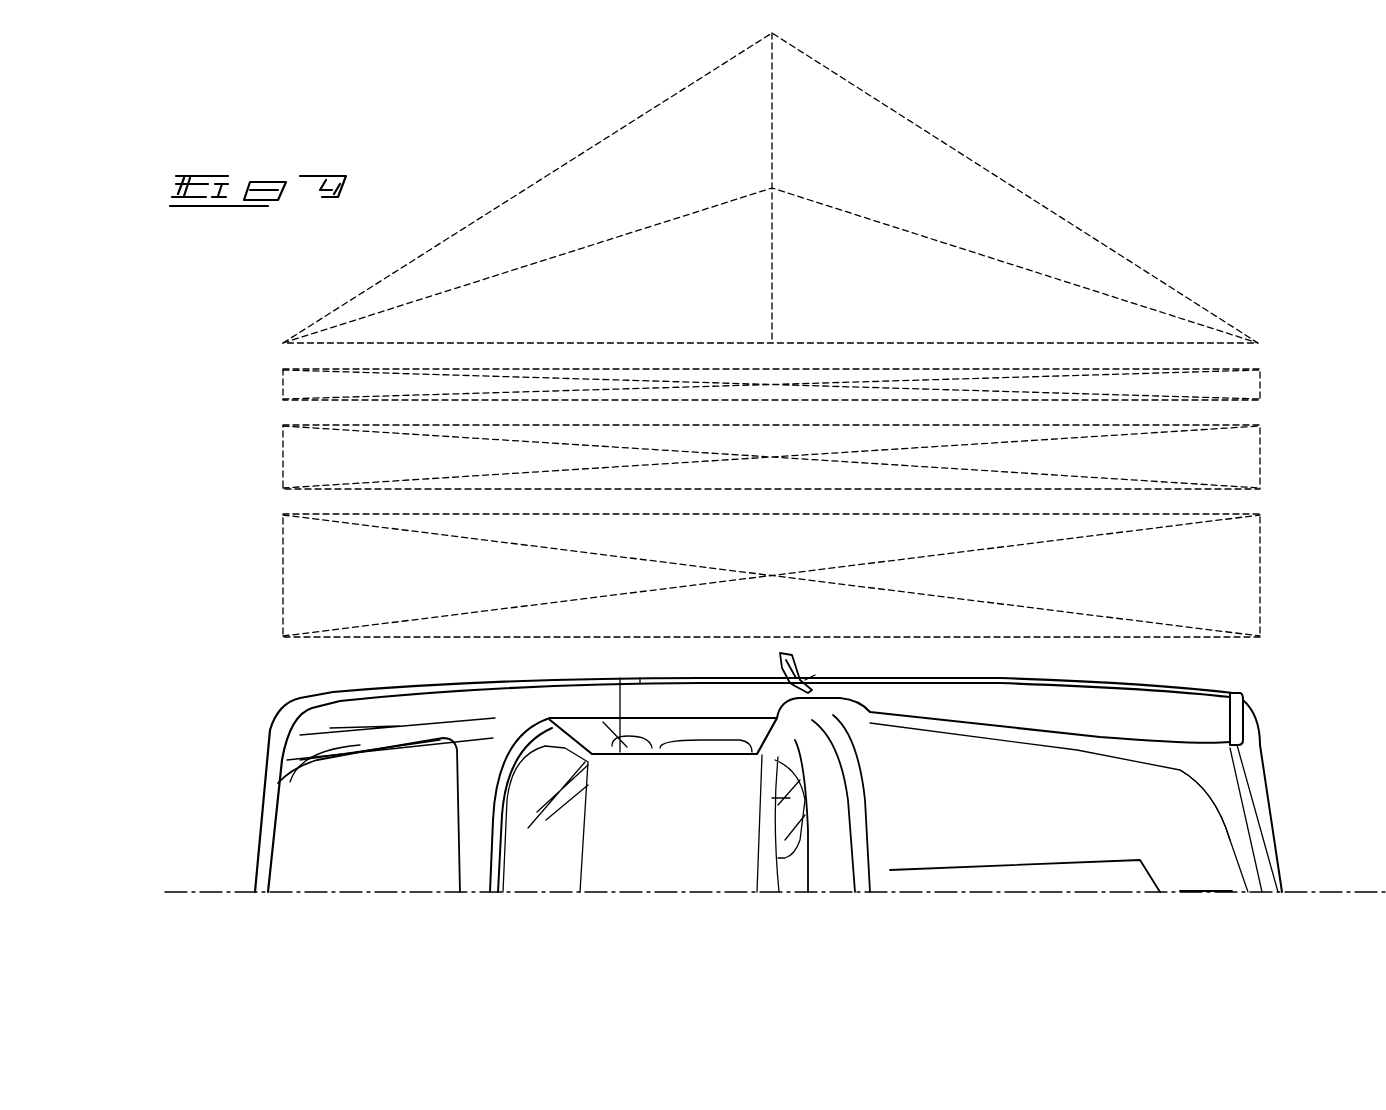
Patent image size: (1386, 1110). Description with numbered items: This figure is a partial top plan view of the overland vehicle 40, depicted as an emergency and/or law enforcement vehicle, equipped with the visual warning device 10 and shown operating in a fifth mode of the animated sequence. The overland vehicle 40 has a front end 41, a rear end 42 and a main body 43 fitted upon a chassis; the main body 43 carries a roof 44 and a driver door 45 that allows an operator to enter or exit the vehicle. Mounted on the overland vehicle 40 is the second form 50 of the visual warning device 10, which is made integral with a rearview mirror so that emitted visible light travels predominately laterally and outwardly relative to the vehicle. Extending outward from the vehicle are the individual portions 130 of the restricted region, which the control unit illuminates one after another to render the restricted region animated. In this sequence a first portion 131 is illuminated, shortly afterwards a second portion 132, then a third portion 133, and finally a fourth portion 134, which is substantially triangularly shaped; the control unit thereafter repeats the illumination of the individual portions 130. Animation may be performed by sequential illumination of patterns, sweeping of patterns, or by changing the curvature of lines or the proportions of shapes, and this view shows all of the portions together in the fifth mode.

The visual warning device 10 is at (816, 673).
The overland vehicle 40 is at (256, 719).
The front end 41 is at (1253, 848).
The rear end 42 is at (292, 818).
The main body 43 is at (473, 850).
The roof 44 is at (690, 857).
The driver door 45 is at (695, 700).
The second form of the visual warning device 50 is at (806, 660).
The individual portions of the restricted region 130 is at (318, 267).
The first portion 131 is at (1262, 593).
The second portion 132 is at (1262, 460).
The third portion 133 is at (1262, 385).
The fourth portion 134 is at (1069, 218).